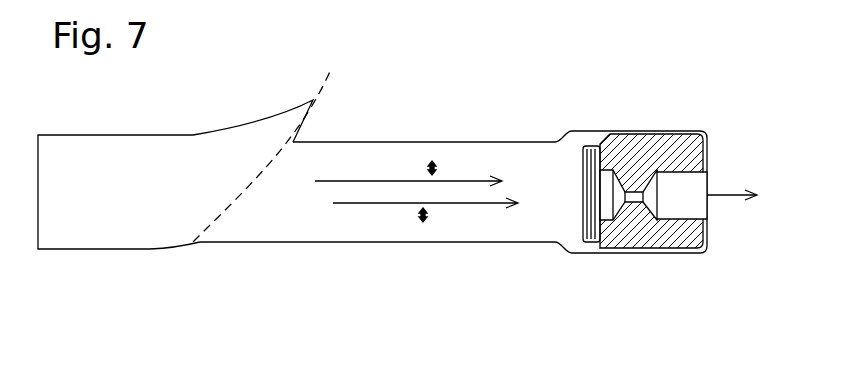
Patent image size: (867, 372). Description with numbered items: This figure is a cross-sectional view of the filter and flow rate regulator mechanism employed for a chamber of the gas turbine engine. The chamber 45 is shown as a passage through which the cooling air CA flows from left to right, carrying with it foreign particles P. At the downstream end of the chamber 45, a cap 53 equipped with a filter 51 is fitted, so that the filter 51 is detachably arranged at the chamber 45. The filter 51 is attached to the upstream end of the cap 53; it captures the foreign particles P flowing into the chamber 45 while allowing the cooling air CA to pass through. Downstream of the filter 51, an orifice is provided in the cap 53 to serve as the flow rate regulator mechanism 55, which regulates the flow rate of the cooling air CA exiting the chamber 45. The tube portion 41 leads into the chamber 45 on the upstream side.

The tube 41 is at (77, 250).
The chamber 45 is at (354, 238).
The filter 51 is at (608, 252).
The cap 53 is at (640, 133).
The flow rate regulator mechanism 55 is at (637, 203).
The foreign particles P is at (420, 224).
The cooling air CA is at (477, 204).